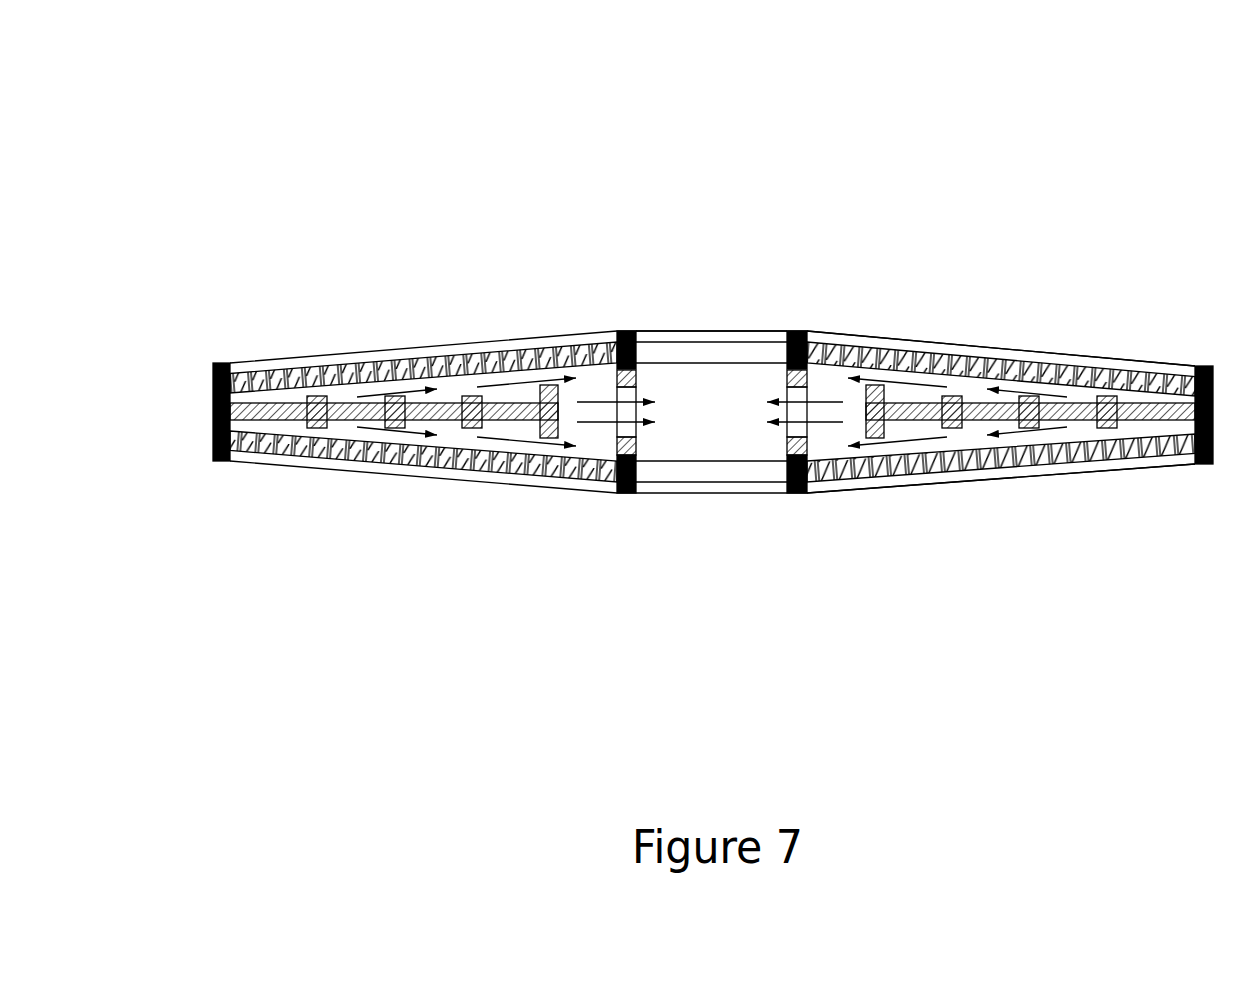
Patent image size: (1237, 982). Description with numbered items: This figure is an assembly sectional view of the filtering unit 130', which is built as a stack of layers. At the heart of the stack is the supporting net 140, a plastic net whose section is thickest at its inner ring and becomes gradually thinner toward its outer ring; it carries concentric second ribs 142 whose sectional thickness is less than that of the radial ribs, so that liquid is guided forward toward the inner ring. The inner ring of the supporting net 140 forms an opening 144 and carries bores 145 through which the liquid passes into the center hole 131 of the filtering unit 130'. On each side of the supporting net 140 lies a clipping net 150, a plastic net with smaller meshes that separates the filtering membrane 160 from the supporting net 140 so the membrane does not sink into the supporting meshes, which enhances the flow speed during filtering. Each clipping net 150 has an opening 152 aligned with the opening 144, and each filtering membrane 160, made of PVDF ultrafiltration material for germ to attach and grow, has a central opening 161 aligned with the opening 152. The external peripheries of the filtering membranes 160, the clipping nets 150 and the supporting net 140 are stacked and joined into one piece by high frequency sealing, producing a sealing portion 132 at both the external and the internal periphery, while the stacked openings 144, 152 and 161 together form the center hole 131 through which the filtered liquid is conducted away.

The filtering unit 130' is at (703, 343).
The center hole 131 is at (721, 312).
The sealing portion 132 is at (630, 330).
The supporting net 140 is at (773, 380).
The second ribs 142 is at (557, 350).
The opening 144 is at (728, 432).
The bores 145 is at (618, 432).
The clipping nets 150 is at (952, 342).
The opening 152 is at (692, 470).
The filtering membrane 160 is at (1042, 333).
The opening 161 is at (668, 333).